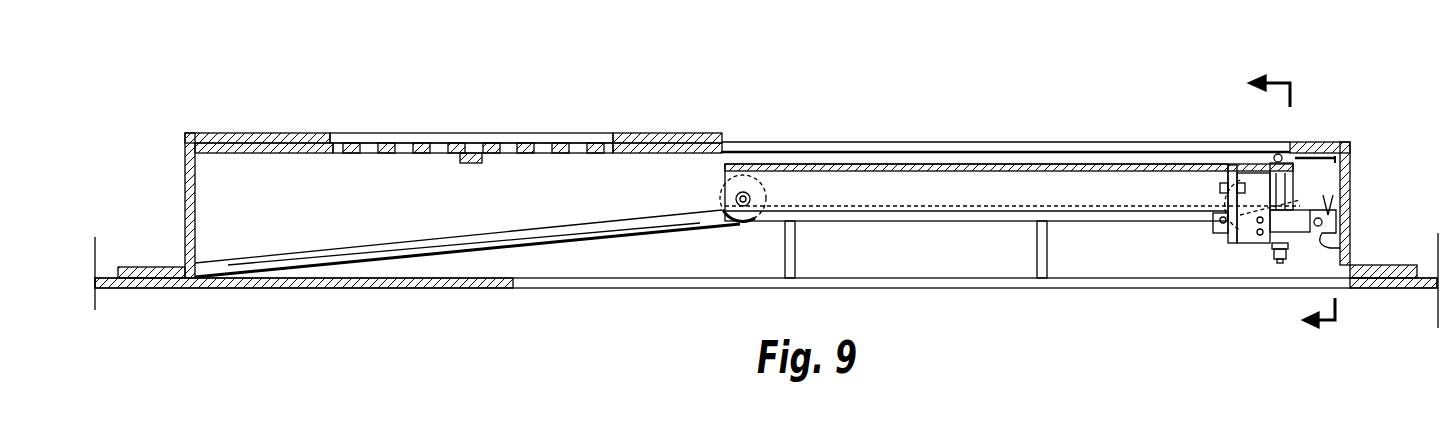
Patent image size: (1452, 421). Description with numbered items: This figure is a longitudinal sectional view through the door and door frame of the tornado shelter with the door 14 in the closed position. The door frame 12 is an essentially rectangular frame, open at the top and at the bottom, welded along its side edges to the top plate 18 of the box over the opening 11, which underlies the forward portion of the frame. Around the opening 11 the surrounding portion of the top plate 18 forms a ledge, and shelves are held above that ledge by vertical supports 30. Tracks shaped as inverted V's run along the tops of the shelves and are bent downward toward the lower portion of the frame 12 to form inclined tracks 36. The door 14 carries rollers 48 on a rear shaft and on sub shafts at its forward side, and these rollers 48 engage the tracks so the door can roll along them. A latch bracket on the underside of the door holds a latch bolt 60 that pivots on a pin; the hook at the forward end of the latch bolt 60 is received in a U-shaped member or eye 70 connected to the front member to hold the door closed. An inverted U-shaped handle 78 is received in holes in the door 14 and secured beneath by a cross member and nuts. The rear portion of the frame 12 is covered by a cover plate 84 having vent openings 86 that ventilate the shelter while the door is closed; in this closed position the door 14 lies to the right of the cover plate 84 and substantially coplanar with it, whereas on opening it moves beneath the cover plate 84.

The opening 11 is at (517, 289).
The door frame 12 is at (1352, 190).
The door 14 is at (1010, 164).
The top plate 18 is at (371, 287).
The vertical supports 30 is at (792, 250).
The inclined tracks 36 is at (467, 242).
The rollers 48 is at (720, 190).
The latch bolt 60 is at (1300, 242).
The U-shaped member or eye 70 is at (1340, 246).
The U-shaped handle 78 is at (1272, 154).
The cover plate 84 is at (655, 134).
The vent openings 86 is at (491, 149).